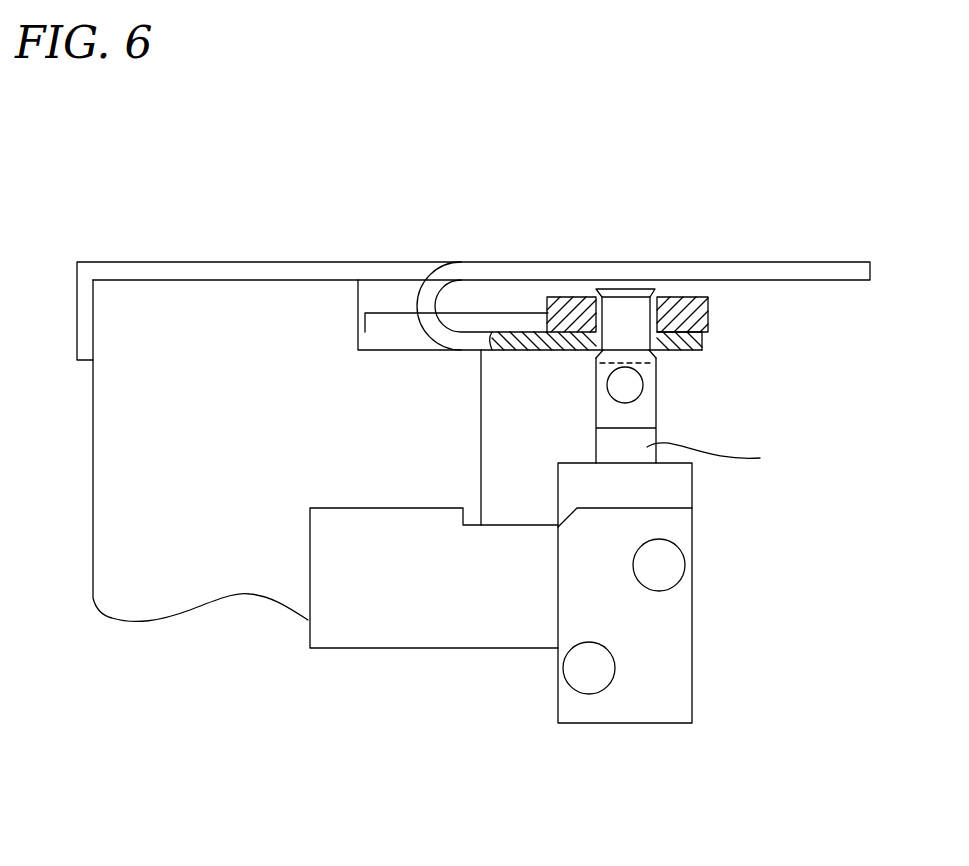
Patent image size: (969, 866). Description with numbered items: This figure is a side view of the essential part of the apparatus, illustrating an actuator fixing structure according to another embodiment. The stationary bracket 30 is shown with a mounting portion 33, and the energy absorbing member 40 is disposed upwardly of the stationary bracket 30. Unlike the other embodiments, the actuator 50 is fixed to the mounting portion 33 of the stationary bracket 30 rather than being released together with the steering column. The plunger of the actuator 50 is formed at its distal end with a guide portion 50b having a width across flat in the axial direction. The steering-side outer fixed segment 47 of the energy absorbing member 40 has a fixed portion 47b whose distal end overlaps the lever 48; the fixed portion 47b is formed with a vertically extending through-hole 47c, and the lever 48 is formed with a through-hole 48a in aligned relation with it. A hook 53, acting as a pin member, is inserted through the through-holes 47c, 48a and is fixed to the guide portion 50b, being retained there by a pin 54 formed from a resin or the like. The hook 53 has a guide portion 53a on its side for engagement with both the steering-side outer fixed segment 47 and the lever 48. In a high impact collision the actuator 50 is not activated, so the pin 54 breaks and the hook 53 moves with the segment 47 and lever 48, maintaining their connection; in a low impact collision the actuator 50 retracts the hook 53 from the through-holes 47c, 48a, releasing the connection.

The stationary bracket 30 is at (152, 568).
The mounting portion 33 is at (452, 613).
The energy absorbing member 40 is at (308, 262).
The steering-side outer fixed segment 47 is at (766, 261).
The fixed portion 47b is at (702, 345).
The through-hole 47c is at (658, 365).
The lever 48 is at (583, 297).
The through-hole 48a is at (608, 289).
The hook 53 is at (605, 313).
The guide portion 53a is at (706, 297).
The actuator 50 is at (677, 482).
The guide portion 50b is at (637, 410).
The pin 54 is at (618, 387).